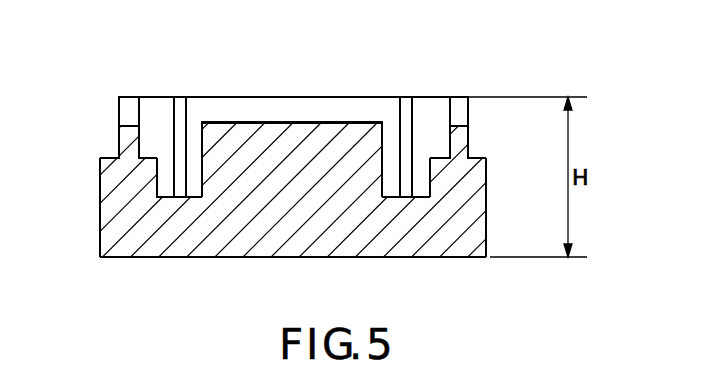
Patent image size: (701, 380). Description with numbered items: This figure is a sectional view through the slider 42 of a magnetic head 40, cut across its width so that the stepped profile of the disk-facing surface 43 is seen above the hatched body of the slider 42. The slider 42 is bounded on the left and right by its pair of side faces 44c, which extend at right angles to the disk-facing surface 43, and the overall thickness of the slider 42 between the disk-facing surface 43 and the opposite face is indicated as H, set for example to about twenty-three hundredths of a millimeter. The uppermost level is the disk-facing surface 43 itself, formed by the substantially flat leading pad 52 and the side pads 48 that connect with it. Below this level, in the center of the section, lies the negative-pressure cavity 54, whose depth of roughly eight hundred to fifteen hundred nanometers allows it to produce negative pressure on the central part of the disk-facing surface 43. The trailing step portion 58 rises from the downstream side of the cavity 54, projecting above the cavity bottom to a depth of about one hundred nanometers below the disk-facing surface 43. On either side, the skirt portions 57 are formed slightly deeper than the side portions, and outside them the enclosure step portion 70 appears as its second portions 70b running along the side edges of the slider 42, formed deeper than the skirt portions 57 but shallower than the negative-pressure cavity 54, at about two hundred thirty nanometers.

The magnetic head 40 is at (409, 63).
The slider 42 is at (178, 243).
The disk-facing surface 43 is at (210, 97).
The side faces 44c is at (100, 230).
The side pad 48 is at (155, 97).
The leading pad 52 is at (267, 97).
The negative-pressure cavity 54 is at (391, 199).
The skirt portions 57 is at (128, 141).
The trailing step portion 58 is at (320, 122).
The enclosure step portion 70 is at (97, 189).
The second portions 70b is at (100, 166).